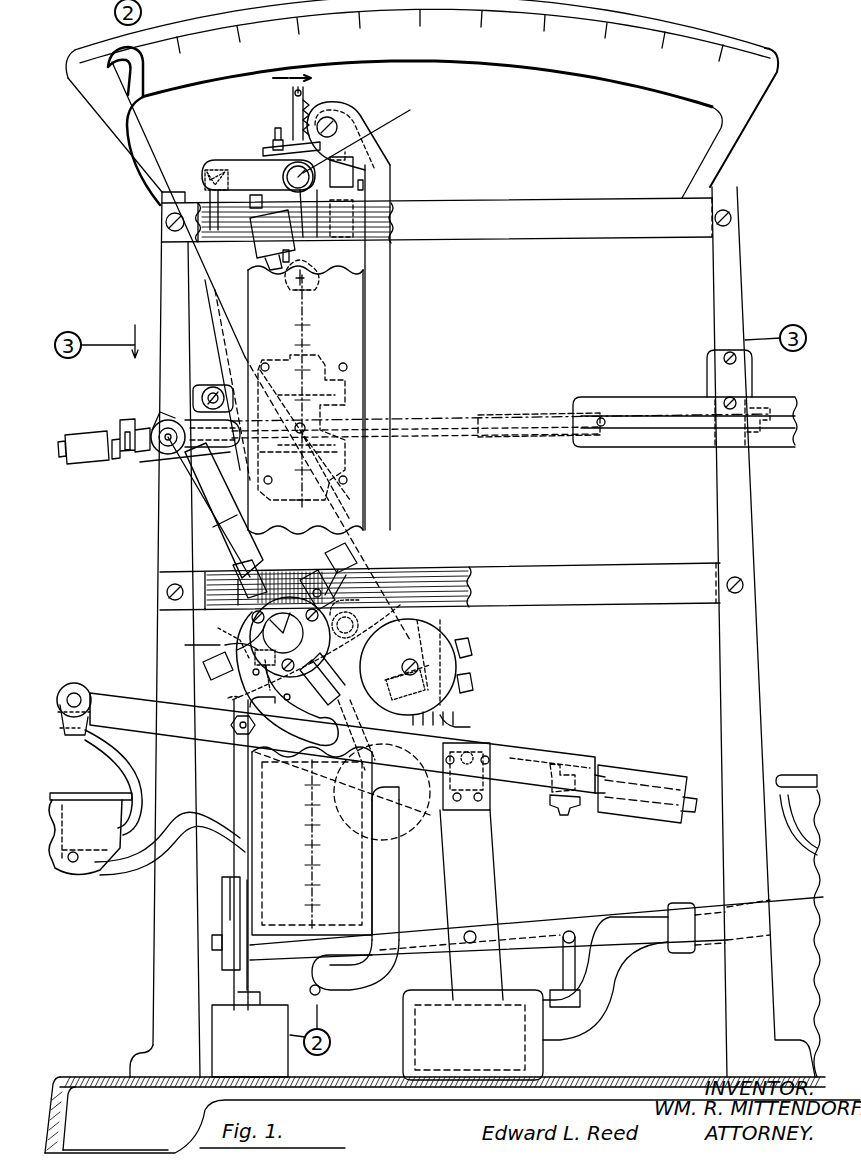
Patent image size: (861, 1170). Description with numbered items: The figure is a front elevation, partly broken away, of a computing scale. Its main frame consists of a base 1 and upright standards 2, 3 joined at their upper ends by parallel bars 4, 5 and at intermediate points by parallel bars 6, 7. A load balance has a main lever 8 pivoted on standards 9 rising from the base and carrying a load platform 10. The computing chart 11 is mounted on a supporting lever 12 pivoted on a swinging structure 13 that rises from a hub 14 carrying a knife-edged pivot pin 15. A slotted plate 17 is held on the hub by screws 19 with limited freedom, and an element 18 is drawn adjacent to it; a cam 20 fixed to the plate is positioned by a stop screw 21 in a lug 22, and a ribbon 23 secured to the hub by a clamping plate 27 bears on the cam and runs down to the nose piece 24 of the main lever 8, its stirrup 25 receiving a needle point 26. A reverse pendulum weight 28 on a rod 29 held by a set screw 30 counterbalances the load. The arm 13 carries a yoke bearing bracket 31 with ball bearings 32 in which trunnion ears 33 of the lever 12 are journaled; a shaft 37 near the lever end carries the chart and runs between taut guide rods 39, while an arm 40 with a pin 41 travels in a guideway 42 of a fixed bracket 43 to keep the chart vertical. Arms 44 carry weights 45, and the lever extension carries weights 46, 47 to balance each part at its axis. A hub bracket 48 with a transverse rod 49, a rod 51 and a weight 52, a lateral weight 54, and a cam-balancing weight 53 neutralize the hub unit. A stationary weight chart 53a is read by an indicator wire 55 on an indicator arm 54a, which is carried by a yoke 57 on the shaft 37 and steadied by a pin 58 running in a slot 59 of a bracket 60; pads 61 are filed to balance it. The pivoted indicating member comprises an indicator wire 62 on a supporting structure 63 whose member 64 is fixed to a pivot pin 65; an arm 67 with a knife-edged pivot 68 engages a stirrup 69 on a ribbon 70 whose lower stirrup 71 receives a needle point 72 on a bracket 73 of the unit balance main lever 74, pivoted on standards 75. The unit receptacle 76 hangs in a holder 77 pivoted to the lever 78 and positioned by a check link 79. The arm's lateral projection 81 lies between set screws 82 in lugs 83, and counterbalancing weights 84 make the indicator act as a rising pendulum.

The base 1 is at (80, 1072).
The upright standard 2 is at (155, 965).
The upright standard 3 is at (748, 688).
The parallel bar 4 is at (530, 235).
The parallel bar 5 is at (448, 238).
The parallel bar 6 is at (527, 572).
The parallel bar 7 is at (455, 572).
The main lever 8 is at (703, 940).
The standard 9 is at (815, 972).
The load platform 10 is at (808, 828).
The chart 11 is at (355, 325).
The supporting lever 12 is at (242, 445).
The swinging structure 13 is at (232, 548).
The hub 14 is at (224, 635).
The pivot pin 15 is at (228, 645).
The plate 17 is at (212, 638).
The support 18 is at (225, 594).
The screw 19 is at (266, 575).
The cam 20 is at (228, 697).
The screw 21 is at (330, 700).
The lug 22 is at (322, 680).
The ribbon 23 is at (234, 785).
The nose piece 24 is at (287, 940).
The stirrup 25 is at (220, 925).
The needle point 26 is at (225, 958).
The clamping plate 27 is at (308, 578).
The weight 28 is at (416, 672).
The rod 29 is at (476, 683).
The set screw 30 is at (394, 662).
The bearing bracket 31 is at (203, 513).
The ball bearing 32 is at (168, 440).
The ear 33 is at (180, 418).
The shaft 37 is at (310, 420).
The guide rod 39 is at (447, 415).
The arm 40 is at (536, 433).
The pin 41 is at (603, 418).
The guideway 42 is at (619, 425).
The bracket 43 is at (662, 447).
The arm 44 is at (318, 366).
The weight 45 is at (318, 283).
The adjustable weight 46 is at (84, 440).
The adjustable weight 47 is at (127, 418).
The bracket 48 is at (335, 605).
The rod 49 is at (355, 622).
The rod 51 is at (359, 735).
The adjustable weight 52 is at (402, 820).
The weight 53 is at (335, 566).
The weight chart 53a is at (606, 68).
The adjustable weight 54 is at (205, 668).
The indicator arm 54a is at (213, 375).
The indicator wire 55 is at (118, 72).
The yoke shaped structure 57 is at (345, 458).
The pin 58 is at (472, 648).
The slot 59 is at (453, 726).
The bracket 60 is at (455, 705).
The pad 61 is at (475, 662).
The indicator wire 62 is at (335, 107).
The supporting structure 63 is at (440, 905).
The member 64 is at (305, 95).
The pivot pin 65 is at (357, 135).
The arm 67 is at (222, 168).
The knife edged pivot 68 is at (205, 178).
The stirrup 69 is at (232, 170).
The ribbon 70 is at (238, 340).
The stirrup 71 is at (290, 648).
The needle point 72 is at (285, 728).
The bracket 73 is at (228, 855).
The main lever 74 is at (228, 735).
The standard 75 is at (495, 850).
The unit receptacle 76 is at (78, 795).
The holder 77 is at (128, 760).
The lever 78 is at (77, 700).
The check link 79 is at (222, 830).
The lateral projection 81 is at (278, 145).
The set screw 82 is at (272, 188).
The lug 83 is at (275, 158).
The counterbalancing weight 84 is at (355, 165).